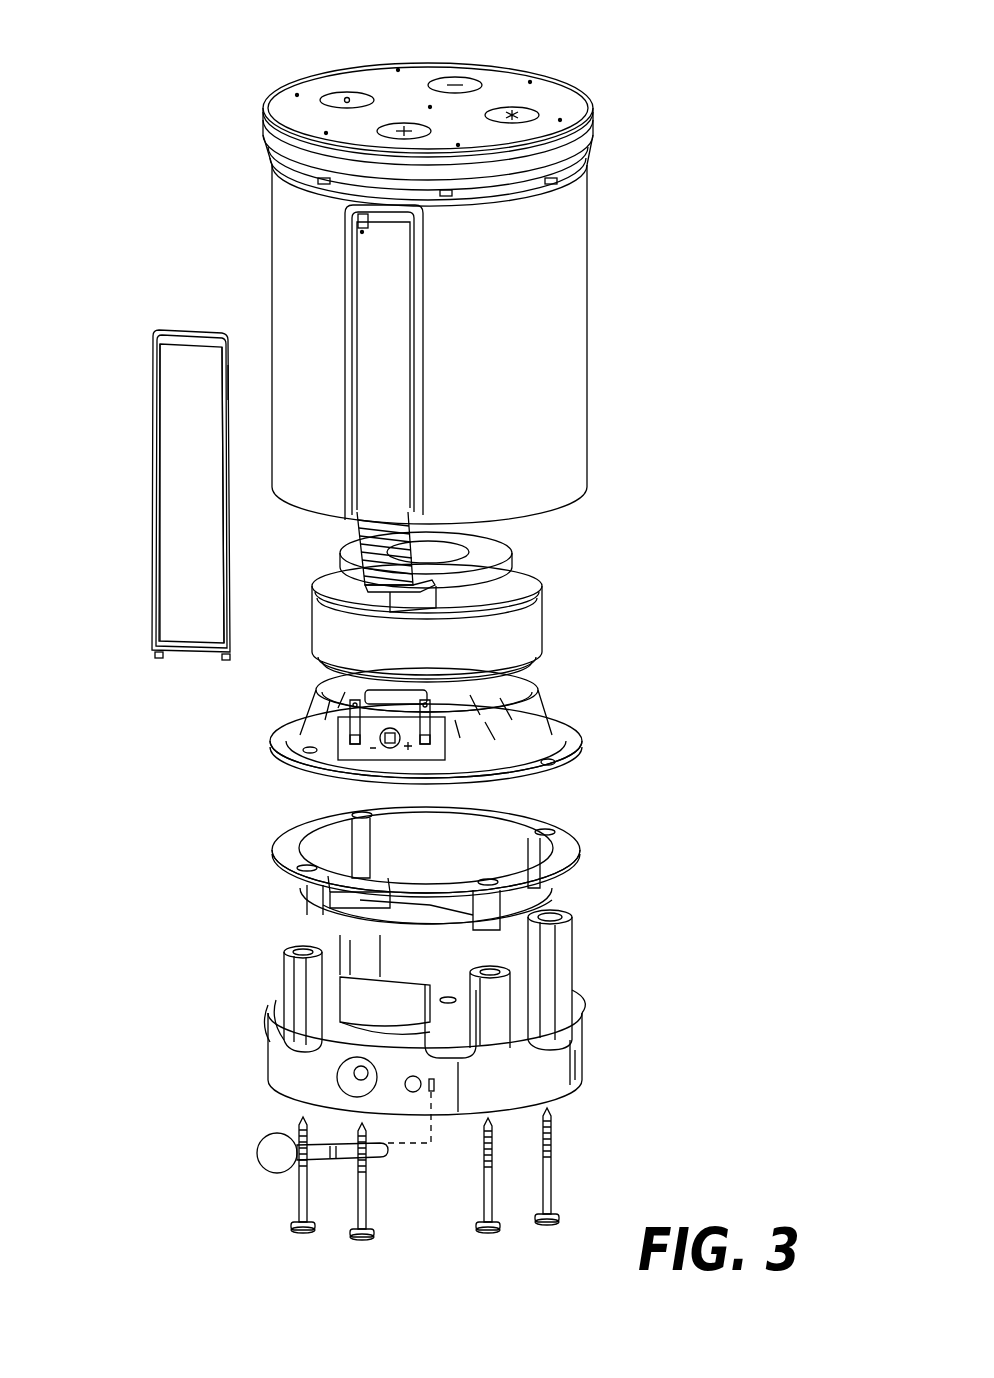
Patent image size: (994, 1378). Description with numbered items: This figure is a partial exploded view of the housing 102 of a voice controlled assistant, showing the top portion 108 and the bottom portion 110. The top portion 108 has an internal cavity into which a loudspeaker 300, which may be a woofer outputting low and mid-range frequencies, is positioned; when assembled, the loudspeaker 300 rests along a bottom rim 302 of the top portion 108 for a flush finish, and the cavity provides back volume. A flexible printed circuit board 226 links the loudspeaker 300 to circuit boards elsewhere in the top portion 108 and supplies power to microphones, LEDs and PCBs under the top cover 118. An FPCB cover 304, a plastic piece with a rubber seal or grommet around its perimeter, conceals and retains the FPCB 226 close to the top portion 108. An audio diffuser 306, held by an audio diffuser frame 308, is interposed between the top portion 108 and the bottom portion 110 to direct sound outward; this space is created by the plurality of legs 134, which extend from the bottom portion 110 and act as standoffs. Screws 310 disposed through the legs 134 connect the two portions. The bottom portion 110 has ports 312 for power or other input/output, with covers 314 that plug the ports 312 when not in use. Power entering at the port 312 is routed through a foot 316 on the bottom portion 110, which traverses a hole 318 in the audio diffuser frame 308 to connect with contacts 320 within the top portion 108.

The housing 102 is at (586, 58).
The top portion 108 is at (588, 277).
The bottom portion 110 is at (588, 1012).
The top cover 118 is at (296, 78).
The plurality of legs 134 is at (284, 985).
The flexible printed circuit board (FPCB) 226 is at (356, 287).
The loudspeaker 300 is at (578, 604).
The bottom rim 302 is at (590, 495).
The FPCB cover 304 is at (153, 447).
The audio diffuser 306 is at (270, 818).
The audio diffuser frame 308 is at (568, 843).
The screws or other fasteners 310 is at (553, 1137).
The ports 312 is at (406, 1089).
The cover(s) 314 is at (258, 1158).
The foot 316 is at (350, 1030).
The hole 318 is at (312, 905).
The contacts 320 is at (337, 779).